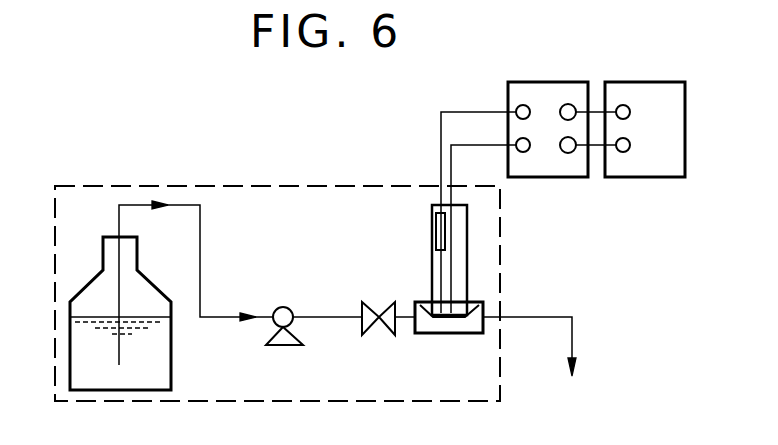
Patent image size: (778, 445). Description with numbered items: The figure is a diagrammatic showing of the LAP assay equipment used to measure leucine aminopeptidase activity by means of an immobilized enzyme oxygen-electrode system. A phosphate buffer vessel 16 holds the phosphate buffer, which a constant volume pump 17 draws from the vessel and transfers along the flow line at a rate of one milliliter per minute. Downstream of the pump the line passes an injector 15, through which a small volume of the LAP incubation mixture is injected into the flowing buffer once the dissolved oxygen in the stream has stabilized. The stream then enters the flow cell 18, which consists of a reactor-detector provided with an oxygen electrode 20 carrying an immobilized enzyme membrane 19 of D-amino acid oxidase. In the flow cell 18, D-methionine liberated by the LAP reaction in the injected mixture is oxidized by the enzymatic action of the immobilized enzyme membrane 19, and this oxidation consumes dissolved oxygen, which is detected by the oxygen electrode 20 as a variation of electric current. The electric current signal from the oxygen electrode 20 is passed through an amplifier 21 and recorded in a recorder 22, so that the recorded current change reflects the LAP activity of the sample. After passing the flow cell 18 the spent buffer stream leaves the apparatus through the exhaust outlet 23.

The injector 15 is at (381, 303).
The phosphate buffer vessel 16 is at (150, 282).
The constant volume pump 17 is at (290, 307).
The flow cell 18 is at (452, 334).
The immobilized enzyme membrane 19 is at (482, 310).
The oxygen electrode 20 is at (467, 272).
The amplifier 21 is at (548, 178).
The recorder 22 is at (645, 178).
The exhaust outlet 23 is at (573, 348).